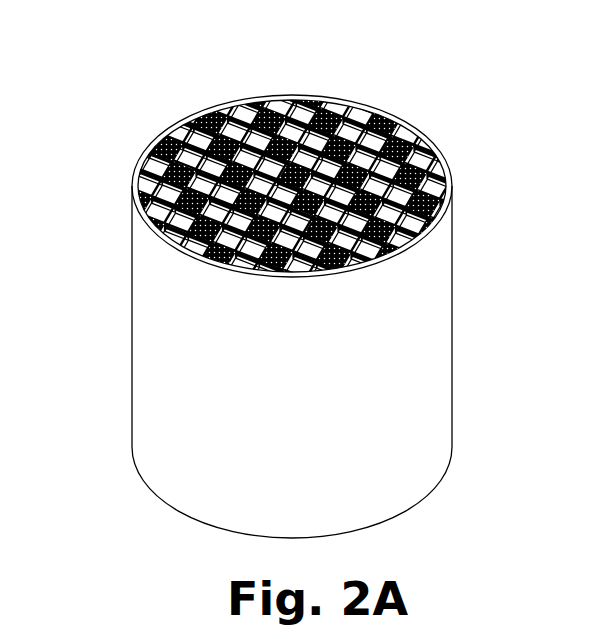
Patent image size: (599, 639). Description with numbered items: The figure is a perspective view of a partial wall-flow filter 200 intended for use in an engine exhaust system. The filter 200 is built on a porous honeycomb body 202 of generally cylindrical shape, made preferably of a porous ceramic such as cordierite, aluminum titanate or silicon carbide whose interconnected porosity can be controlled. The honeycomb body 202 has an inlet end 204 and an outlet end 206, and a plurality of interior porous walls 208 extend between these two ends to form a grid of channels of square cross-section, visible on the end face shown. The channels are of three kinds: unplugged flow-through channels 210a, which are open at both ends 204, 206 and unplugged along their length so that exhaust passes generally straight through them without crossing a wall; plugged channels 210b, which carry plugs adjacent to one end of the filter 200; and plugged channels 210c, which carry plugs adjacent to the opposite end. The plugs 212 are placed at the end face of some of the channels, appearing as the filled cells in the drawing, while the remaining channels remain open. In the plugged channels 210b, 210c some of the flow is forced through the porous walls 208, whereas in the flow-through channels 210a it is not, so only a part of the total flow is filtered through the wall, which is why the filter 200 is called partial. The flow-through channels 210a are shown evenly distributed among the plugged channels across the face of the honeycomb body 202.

The partial wall-flow filter 200 is at (395, 87).
The porous honeycomb body 202 is at (452, 251).
The inlet end 204 is at (365, 525).
The outlet end 206 is at (430, 141).
The porous walls 208 is at (341, 100).
The unplugged flow-through channels 210a is at (162, 151).
The plugged channels 210b is at (165, 205).
The plugged channels 210c is at (205, 116).
The plugs 212 is at (253, 100).